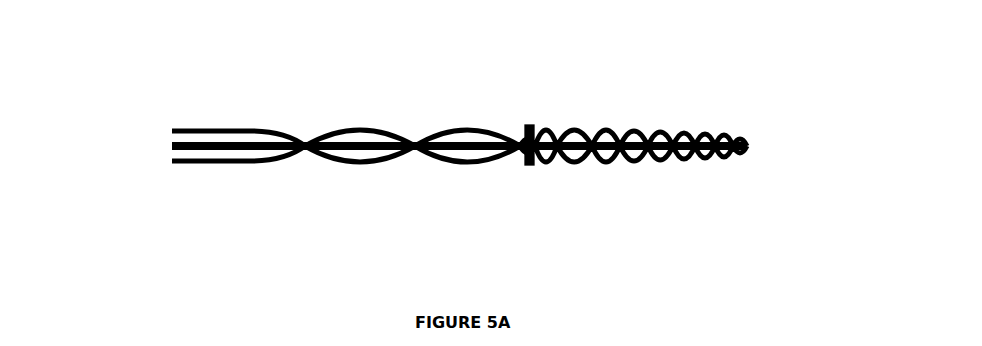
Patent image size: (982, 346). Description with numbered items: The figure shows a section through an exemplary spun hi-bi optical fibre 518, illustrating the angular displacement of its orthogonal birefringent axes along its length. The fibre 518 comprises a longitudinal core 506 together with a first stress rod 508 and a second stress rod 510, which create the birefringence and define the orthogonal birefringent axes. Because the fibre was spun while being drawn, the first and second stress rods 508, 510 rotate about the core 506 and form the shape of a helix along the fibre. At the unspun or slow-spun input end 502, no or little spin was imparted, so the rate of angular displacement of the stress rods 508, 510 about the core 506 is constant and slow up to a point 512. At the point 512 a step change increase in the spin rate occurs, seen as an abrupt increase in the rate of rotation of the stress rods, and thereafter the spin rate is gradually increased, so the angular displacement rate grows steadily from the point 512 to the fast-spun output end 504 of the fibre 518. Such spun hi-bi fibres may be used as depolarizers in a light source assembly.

The unspun end 502 is at (393, 145).
The fast-spun end 504 is at (768, 144).
The core 506 is at (172, 147).
The first stress rod 508 is at (208, 125).
The second stress rod 510 is at (204, 164).
The point 512 is at (530, 124).
The spun hi-bi fibre 518 is at (727, 63).